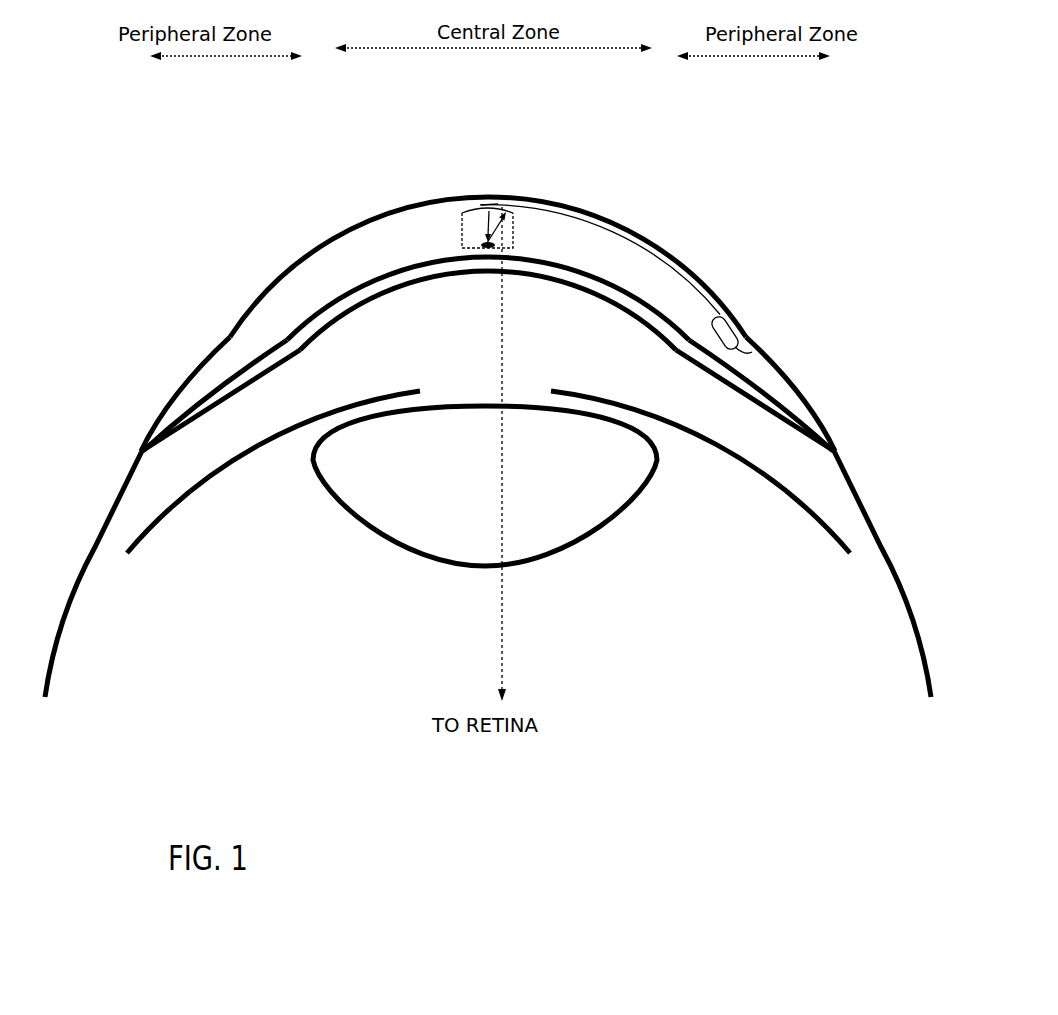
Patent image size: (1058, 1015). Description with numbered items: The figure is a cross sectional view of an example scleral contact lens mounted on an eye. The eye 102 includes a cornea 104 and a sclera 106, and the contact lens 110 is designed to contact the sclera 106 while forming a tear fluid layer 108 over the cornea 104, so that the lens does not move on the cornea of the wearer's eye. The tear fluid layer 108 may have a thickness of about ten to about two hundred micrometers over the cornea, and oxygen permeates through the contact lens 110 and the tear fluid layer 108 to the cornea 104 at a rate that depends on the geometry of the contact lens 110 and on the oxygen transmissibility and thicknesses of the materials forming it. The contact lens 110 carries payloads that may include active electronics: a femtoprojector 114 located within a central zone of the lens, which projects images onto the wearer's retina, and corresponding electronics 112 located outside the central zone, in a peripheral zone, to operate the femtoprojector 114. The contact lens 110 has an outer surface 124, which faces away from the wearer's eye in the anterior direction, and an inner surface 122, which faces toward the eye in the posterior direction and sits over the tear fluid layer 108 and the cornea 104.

The eye 102 is at (488, 513).
The cornea 104 is at (411, 285).
The sclera 106 is at (207, 424).
The tear fluid layer 108 is at (610, 290).
The contact lens 110 is at (295, 277).
The electronics 112 is at (728, 327).
The femtoprojector 114 is at (517, 222).
The inner surface 122 is at (366, 280).
The outer surface 124 is at (421, 199).